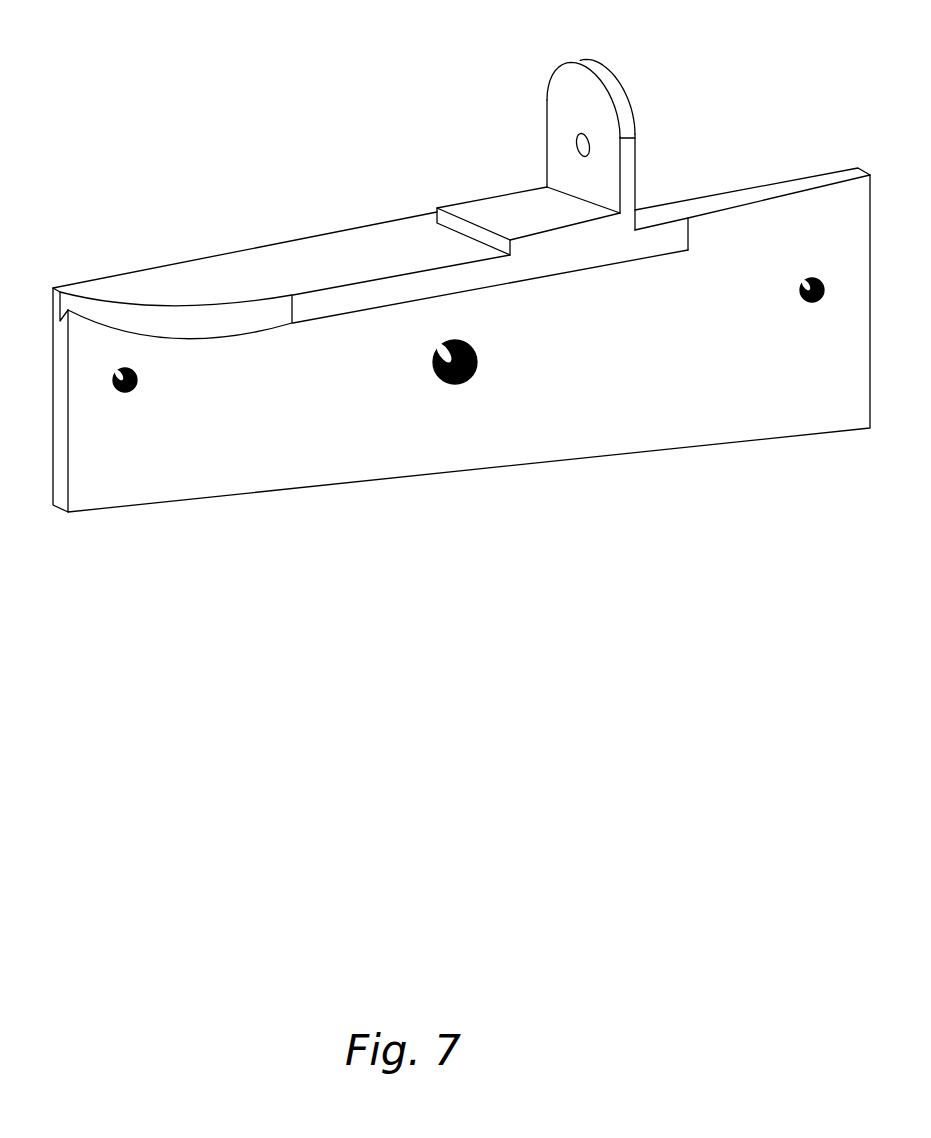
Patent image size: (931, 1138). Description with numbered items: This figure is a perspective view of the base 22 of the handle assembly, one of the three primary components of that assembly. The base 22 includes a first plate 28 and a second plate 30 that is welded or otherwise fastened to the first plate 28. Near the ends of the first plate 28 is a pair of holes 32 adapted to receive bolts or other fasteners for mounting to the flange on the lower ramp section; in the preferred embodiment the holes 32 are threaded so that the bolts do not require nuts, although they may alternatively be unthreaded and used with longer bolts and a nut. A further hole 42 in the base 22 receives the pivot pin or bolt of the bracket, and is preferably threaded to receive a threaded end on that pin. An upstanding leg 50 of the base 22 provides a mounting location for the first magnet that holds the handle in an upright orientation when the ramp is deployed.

The base 22 is at (312, 210).
The first plate 28 is at (513, 445).
The second plate 30 is at (235, 270).
The holes 32 is at (138, 378).
The hole 42 is at (478, 355).
The upstanding leg 50 is at (560, 108).